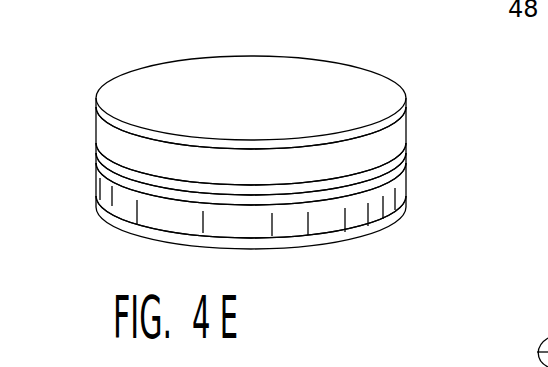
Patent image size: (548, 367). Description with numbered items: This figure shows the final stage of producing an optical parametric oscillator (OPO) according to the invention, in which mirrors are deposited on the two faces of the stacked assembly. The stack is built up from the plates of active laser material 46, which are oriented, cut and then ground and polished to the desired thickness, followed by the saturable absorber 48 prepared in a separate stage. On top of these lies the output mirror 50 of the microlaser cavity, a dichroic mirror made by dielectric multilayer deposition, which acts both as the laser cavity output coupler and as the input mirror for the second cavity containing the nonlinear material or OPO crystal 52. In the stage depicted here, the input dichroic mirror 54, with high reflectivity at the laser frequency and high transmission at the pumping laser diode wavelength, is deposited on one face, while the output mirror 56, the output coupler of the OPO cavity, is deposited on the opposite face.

The output mirror 56 is at (183, 61).
The nonlinear material or OPO crystal 52 is at (398, 133).
The output mirror of the microlaser cavity 50 is at (405, 163).
The saturable absorber 48 is at (372, 182).
The plates of active laser material 46 is at (355, 220).
The input dichroic mirror 54 is at (131, 228).